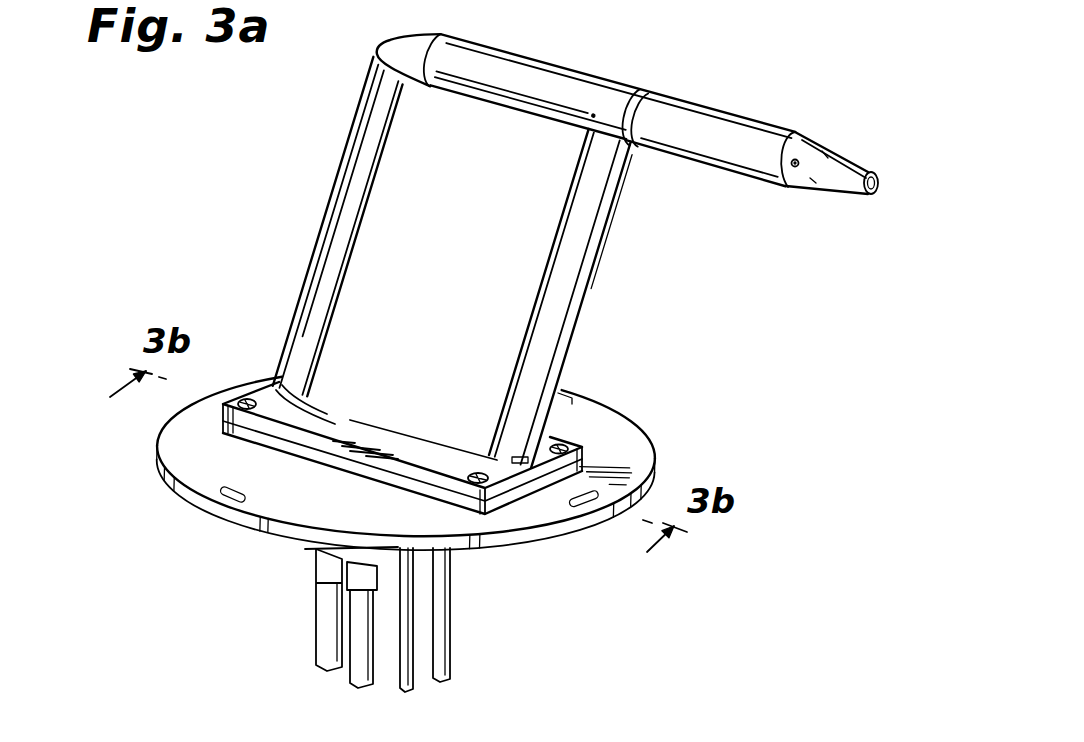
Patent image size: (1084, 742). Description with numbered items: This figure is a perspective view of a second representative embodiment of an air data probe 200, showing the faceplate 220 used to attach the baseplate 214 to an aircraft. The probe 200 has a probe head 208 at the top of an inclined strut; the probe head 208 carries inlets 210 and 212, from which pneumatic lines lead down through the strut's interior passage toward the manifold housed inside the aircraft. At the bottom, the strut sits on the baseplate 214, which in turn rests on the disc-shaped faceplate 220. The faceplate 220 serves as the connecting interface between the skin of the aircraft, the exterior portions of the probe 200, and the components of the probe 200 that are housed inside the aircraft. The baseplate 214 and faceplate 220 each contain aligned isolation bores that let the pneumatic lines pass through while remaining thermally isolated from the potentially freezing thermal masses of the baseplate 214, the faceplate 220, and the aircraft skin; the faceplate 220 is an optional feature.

The probe 200 is at (544, 350).
The probe head 208 is at (573, 82).
The inlet 210 is at (879, 182).
The inlet 212 is at (795, 168).
The baseplate 214 is at (500, 491).
The faceplate 220 is at (548, 527).